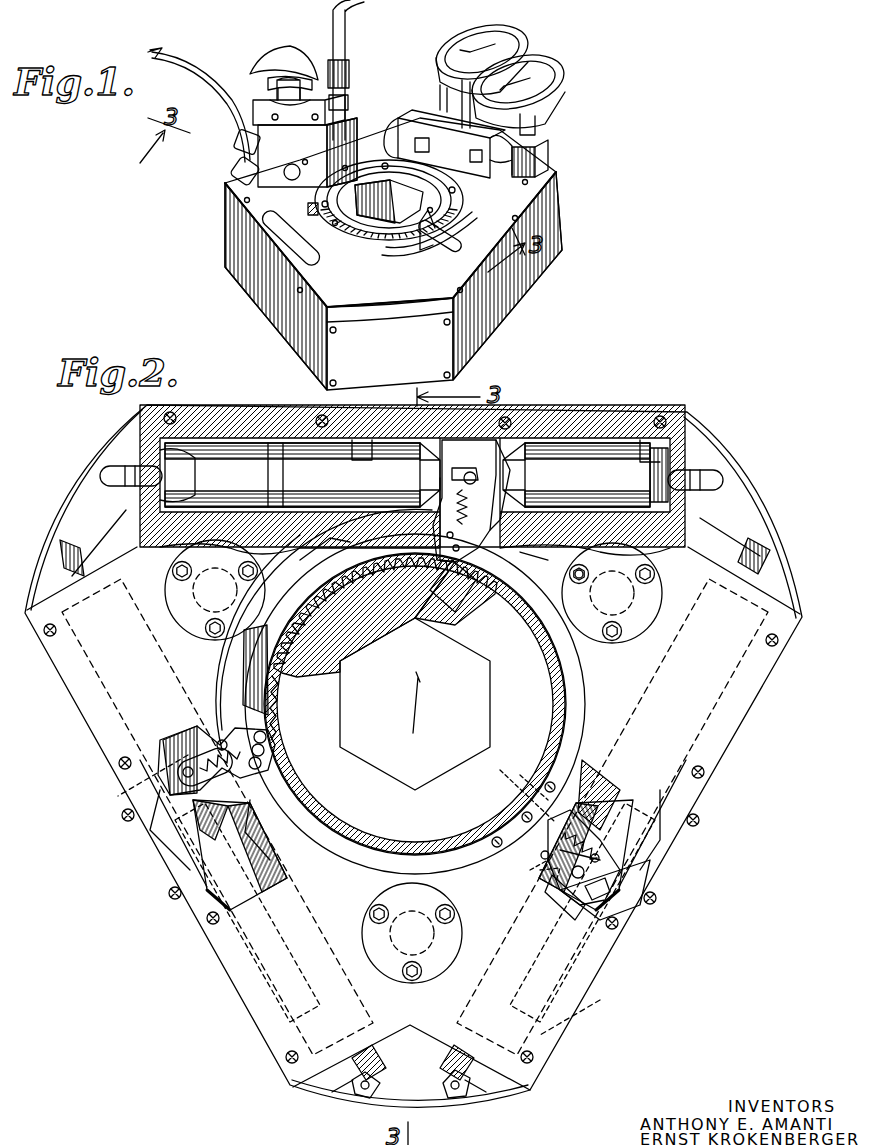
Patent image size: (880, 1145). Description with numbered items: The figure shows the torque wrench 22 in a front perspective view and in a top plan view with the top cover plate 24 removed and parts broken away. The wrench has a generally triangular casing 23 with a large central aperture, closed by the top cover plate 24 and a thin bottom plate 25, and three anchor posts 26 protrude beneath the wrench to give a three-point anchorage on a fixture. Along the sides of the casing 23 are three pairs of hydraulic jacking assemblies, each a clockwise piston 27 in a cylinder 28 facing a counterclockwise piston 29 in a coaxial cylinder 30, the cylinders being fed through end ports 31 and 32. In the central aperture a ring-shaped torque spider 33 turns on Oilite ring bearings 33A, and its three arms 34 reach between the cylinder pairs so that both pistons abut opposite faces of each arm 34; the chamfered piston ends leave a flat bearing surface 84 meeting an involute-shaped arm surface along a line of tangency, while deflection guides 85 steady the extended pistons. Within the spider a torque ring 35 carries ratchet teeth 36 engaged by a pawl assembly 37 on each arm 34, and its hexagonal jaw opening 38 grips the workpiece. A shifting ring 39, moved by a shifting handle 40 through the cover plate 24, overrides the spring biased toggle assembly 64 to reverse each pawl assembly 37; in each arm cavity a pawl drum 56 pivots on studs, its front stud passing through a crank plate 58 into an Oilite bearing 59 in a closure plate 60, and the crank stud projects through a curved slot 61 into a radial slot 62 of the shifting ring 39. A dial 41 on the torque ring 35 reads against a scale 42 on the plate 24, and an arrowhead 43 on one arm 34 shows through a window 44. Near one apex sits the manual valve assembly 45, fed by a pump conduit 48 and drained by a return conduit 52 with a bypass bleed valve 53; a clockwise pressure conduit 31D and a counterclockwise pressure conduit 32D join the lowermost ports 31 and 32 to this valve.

In FIG. 1, the torque wrench 22 is at (198, 242).
In FIG. 2, the torque wrench 22 is at (172, 930).
In FIG. 1, the casing 23 is at (556, 226).
In FIG. 2, the casing 23 is at (650, 410).
In FIG. 1, the top cover plate 24 is at (552, 176).
In FIG. 1, the bottom plate 25 is at (540, 290).
In FIG. 2, the anchor posts 26 is at (190, 593).
In FIG. 2, the piston 27 is at (340, 489).
In FIG. 2, the cylinder 28 is at (250, 428).
In FIG. 2, the piston 29 is at (605, 462).
In FIG. 2, the cylinder 30 is at (590, 430).
In FIG. 2, the hydraulic port 31 is at (200, 440).
In FIG. 2, the clockwise pressure conduit 31D is at (362, 1098).
In FIG. 2, the hydraulic port 32 is at (80, 500).
In FIG. 2, the counterclockwise pressure conduit 32D is at (452, 1098).
In FIG. 2, the torque spider 33 is at (328, 568).
In FIG. 2, the Oilite ring bearings 33A is at (474, 828).
In FIG. 2, the arm 34 is at (510, 440).
In FIG. 1, the torque ring 35 is at (387, 235).
In FIG. 2, the torque ring 35 is at (350, 652).
In FIG. 2, the ratchet teeth 36 is at (308, 615).
In FIG. 2, the pawl assembly 37 is at (430, 622).
In FIG. 1, the jaw opening 38 is at (368, 220).
In FIG. 2, the jaw opening 38 is at (382, 770).
In FIG. 2, the shifting ring 39 is at (480, 875).
In FIG. 1, the shifting handle 40 is at (442, 250).
In FIG. 2, the shifting handle 40 is at (590, 578).
In FIG. 1, the dial 41 is at (478, 168).
In FIG. 1, the scale 42 is at (248, 205).
In FIG. 2, the arrowhead 43 is at (625, 868).
In FIG. 1, the window 44 is at (288, 240).
In FIG. 1, the manual valve assembly 45 is at (302, 58).
In FIG. 1, the pump conduit 48 is at (346, 46).
In FIG. 1, the return conduit 52 is at (216, 87).
In FIG. 1, the bypass bleed valve 53 is at (246, 182).
In FIG. 2, the pawl drum 56 is at (405, 522).
In FIG. 2, the crank plate 58 is at (228, 692).
In FIG. 2, the Oilite bearing 59 is at (525, 790).
In FIG. 2, the closure plate 60 is at (572, 890).
In FIG. 2, the curved slot 61 is at (548, 878).
In FIG. 2, the radial slot 62 is at (532, 878).
In FIG. 2, the spring biased toggle assembly 64 is at (478, 490).
In FIG. 2, the flat bearing surface 84 is at (520, 470).
In FIG. 2, the deflection guides 85 is at (372, 440).